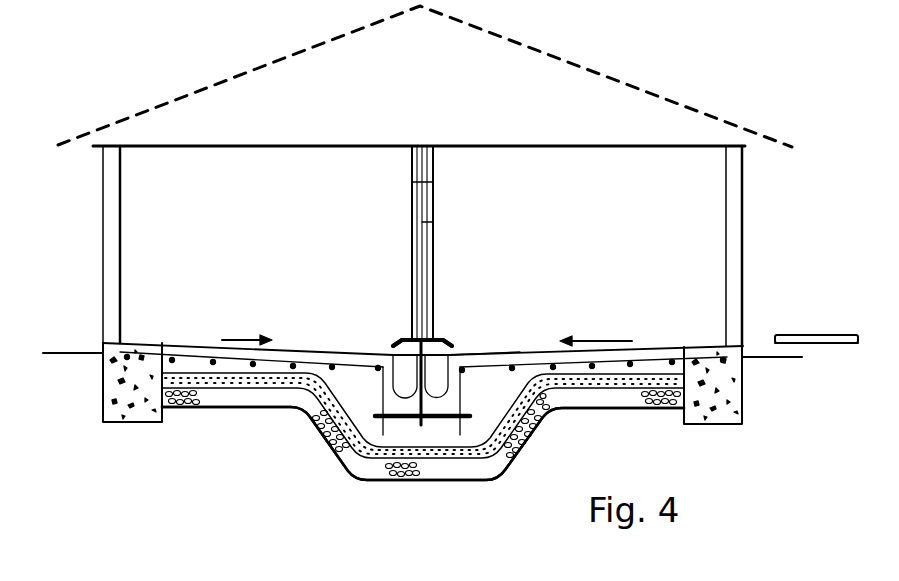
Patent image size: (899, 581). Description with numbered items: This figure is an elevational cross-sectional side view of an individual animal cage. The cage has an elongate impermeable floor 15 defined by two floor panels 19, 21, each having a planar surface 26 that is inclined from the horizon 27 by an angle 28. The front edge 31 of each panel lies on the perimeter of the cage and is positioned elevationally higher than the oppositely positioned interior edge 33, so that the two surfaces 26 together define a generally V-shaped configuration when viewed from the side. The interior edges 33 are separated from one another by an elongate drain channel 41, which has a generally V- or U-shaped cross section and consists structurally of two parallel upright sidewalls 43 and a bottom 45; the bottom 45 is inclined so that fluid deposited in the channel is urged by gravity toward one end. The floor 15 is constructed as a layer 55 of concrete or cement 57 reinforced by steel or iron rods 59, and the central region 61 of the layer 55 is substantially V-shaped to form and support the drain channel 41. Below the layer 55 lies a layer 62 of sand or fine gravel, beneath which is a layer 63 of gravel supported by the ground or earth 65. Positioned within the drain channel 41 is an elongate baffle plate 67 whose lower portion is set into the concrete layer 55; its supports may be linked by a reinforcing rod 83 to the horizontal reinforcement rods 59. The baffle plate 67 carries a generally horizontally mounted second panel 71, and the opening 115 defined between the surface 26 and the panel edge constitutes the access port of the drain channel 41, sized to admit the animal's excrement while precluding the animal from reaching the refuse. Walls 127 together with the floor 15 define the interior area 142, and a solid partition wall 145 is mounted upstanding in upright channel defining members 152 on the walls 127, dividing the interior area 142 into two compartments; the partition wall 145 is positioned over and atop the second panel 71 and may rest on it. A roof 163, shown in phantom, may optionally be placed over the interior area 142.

The roof 163 is at (292, 55).
The walls 127 is at (108, 227).
The interior area 142 is at (384, 180).
The upright channel defining members 152 is at (433, 191).
The partition wall 145 is at (433, 222).
The second panel 71 is at (433, 338).
The baffle plate 67 is at (445, 340).
The opening 115 is at (400, 340).
The upright sidewalls 43 is at (393, 376).
The drain channel 41 is at (448, 392).
The bottom 45 is at (432, 417).
The floor 15 is at (155, 344).
The planar surface 26 is at (189, 345).
The reinforcing rod 83 is at (276, 355).
The floor panel 19 is at (306, 352).
The floor panel 21 is at (516, 350).
The interior edge 33 is at (393, 354).
The front edge 31 is at (102, 343).
The layer 55 is at (103, 393).
The concrete or cement 57 is at (717, 415).
The ground or earth 65 is at (358, 502).
The layer 63 is at (478, 469).
The steel or iron rods 59 is at (200, 388).
The layer 62 is at (247, 395).
The central region 61 is at (323, 443).
The angle 28 is at (768, 335).
The horizon 27 is at (835, 335).